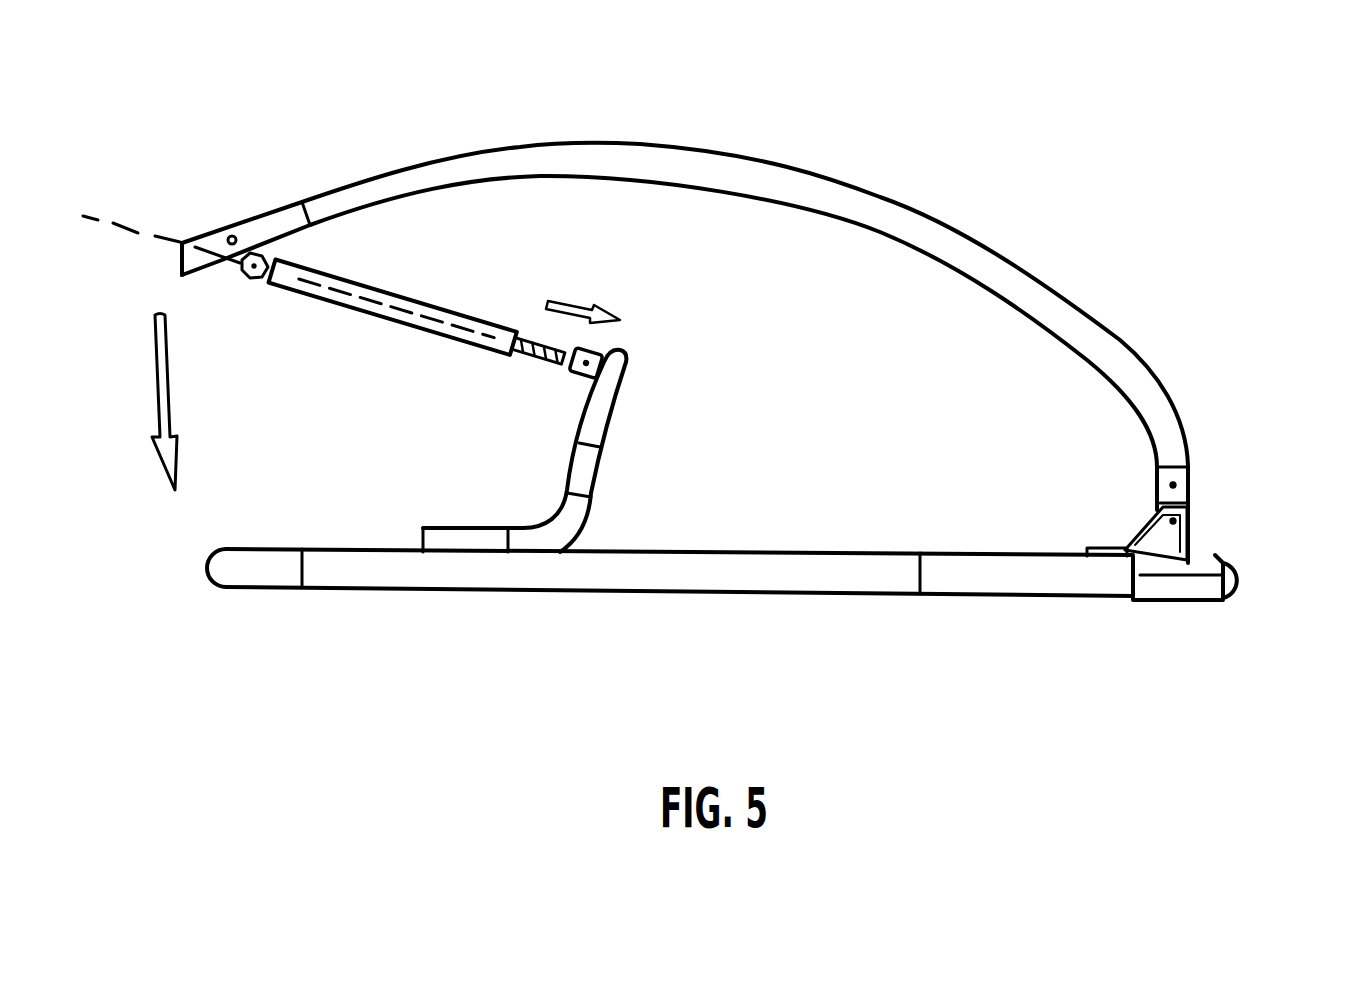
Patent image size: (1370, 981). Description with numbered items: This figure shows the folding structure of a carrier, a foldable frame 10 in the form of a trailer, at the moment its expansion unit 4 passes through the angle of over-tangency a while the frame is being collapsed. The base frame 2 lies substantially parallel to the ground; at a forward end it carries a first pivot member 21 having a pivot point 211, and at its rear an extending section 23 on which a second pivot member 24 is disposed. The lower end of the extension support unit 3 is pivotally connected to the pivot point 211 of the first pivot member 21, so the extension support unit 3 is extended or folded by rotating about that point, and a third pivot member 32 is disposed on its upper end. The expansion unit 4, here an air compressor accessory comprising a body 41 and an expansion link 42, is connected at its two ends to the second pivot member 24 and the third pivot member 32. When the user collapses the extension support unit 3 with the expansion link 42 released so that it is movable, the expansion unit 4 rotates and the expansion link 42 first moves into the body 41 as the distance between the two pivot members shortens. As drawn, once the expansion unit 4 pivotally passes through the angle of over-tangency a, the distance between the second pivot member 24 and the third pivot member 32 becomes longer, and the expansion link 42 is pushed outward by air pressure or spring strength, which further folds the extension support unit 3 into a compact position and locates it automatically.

The base frame 2 is at (655, 580).
The extension support unit 3 is at (497, 148).
The expansion unit 4 is at (398, 402).
The foldable frame 10 is at (965, 120).
The first pivot member 21 is at (1195, 590).
The extending section 23 is at (587, 497).
The second pivot member 24 is at (607, 357).
The third pivot member 32 is at (243, 282).
The body 41 is at (360, 307).
The expansion link 42 is at (537, 360).
The pivot point 211 is at (1193, 515).
The angle of over-tangency a is at (113, 223).